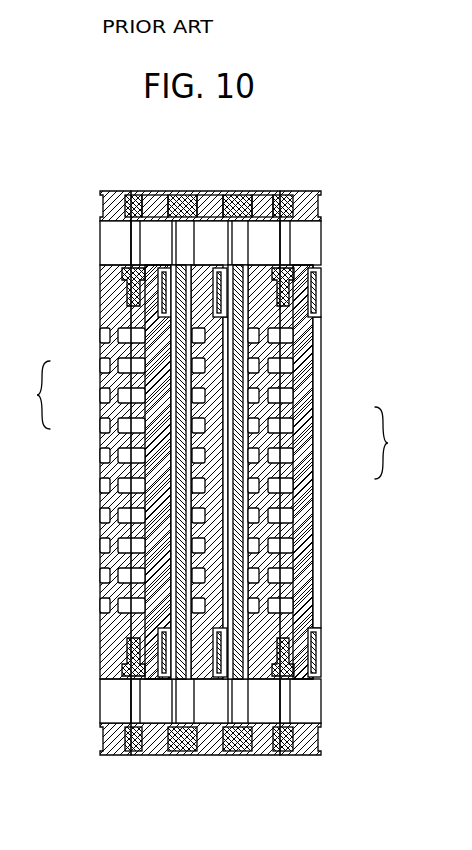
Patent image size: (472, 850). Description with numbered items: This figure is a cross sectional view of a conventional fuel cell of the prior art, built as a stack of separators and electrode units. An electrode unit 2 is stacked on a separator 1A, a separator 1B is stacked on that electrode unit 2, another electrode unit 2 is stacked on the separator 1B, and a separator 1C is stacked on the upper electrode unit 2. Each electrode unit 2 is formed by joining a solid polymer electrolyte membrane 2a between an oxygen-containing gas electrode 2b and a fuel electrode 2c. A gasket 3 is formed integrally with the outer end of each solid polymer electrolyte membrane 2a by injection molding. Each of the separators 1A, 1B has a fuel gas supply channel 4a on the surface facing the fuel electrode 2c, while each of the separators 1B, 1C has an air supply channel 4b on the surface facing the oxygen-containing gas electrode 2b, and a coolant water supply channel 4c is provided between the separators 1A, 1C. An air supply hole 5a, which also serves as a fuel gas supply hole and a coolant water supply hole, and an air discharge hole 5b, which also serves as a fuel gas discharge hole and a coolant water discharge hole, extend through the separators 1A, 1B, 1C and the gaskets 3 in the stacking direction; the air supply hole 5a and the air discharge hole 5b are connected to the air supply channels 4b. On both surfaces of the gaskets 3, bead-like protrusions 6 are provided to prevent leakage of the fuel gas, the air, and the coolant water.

The separator 1A is at (270, 207).
The separator 1B is at (213, 200).
The separator 1C is at (158, 200).
The electrode unit 2 is at (210, 420).
The solid polymer electrolyte membrane 2a is at (172, 383).
The oxygen-containing gas electrode 2b is at (172, 408).
The fuel electrode 2c is at (172, 362).
The gasket 3 is at (181, 203).
The fuel gas supply channel 4a is at (282, 530).
The air supply channel 4b is at (222, 553).
The coolant water supply channel 4c is at (200, 580).
The air supply hole 5a is at (267, 248).
The air discharge hole 5b is at (267, 708).
The bead-like protrusion 6 is at (203, 756).